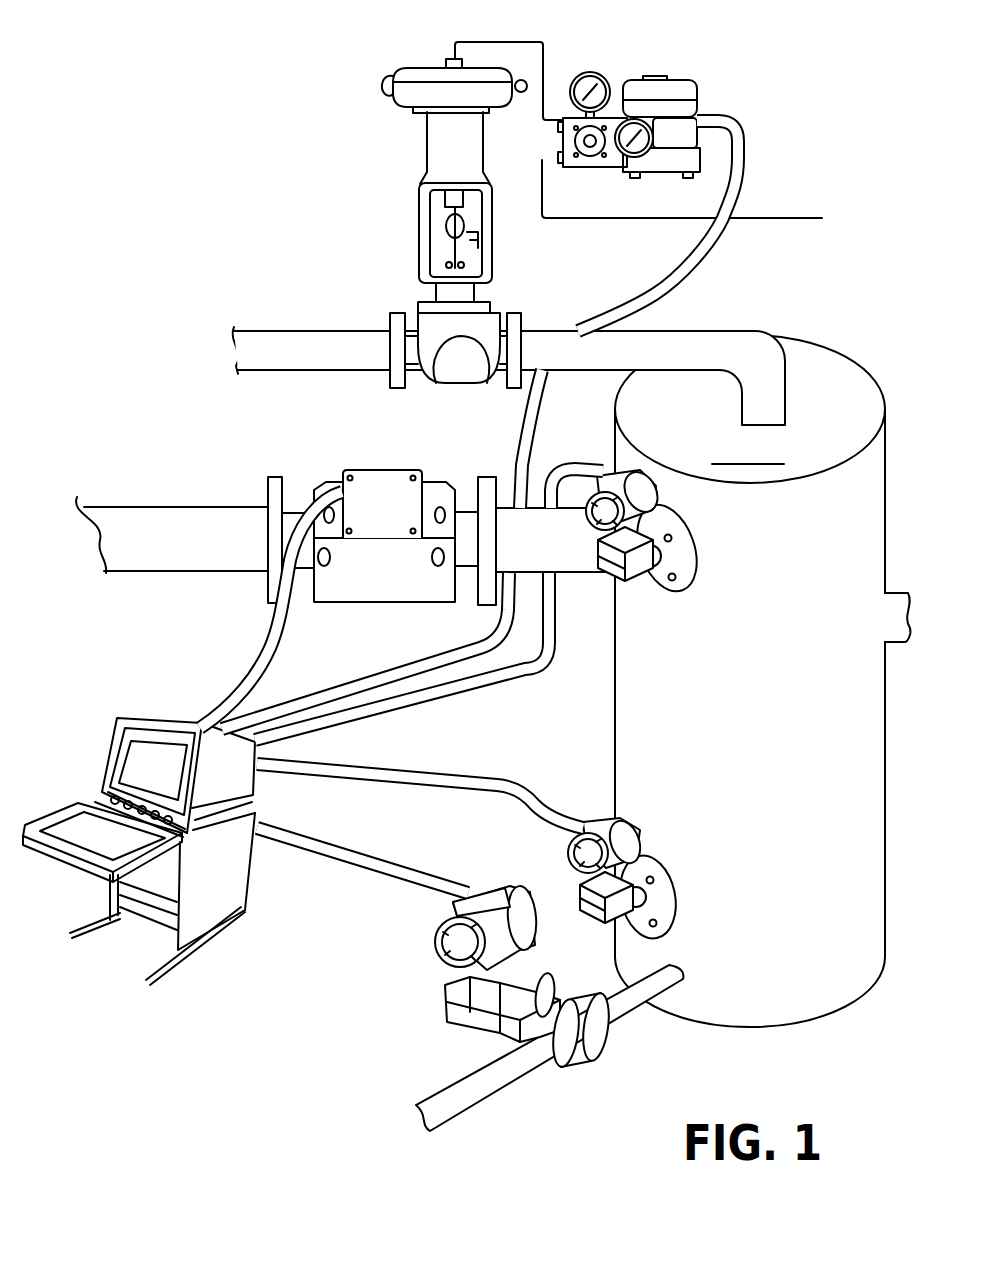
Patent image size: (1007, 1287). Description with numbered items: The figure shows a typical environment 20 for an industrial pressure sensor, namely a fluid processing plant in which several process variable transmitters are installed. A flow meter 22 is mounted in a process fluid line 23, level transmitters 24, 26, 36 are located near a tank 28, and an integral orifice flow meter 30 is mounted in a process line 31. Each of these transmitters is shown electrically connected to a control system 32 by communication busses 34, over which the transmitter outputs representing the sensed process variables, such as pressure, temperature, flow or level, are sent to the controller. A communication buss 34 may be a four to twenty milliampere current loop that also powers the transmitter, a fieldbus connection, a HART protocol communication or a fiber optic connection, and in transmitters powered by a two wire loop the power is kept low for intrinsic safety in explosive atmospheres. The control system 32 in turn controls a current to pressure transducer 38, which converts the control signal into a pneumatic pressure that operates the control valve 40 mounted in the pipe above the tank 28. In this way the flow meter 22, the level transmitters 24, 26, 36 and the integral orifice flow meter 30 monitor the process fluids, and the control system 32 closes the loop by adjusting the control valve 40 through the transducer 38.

The typical environment for an industrial pressure sensor 20 is at (818, 110).
The flow meter 22 is at (392, 578).
The process fluid line 23 is at (157, 504).
The level transmitter 24 is at (655, 866).
The level transmitter 26 is at (648, 505).
The tank 28 is at (844, 435).
The integral orifice flow meter 30 is at (630, 1045).
The process line 31 is at (473, 1100).
The control system 32 is at (262, 882).
The communication buss 34 is at (226, 662).
The level transmitter 36 is at (450, 916).
The current to pressure transducer 38 is at (653, 71).
The control valve 40 is at (390, 104).